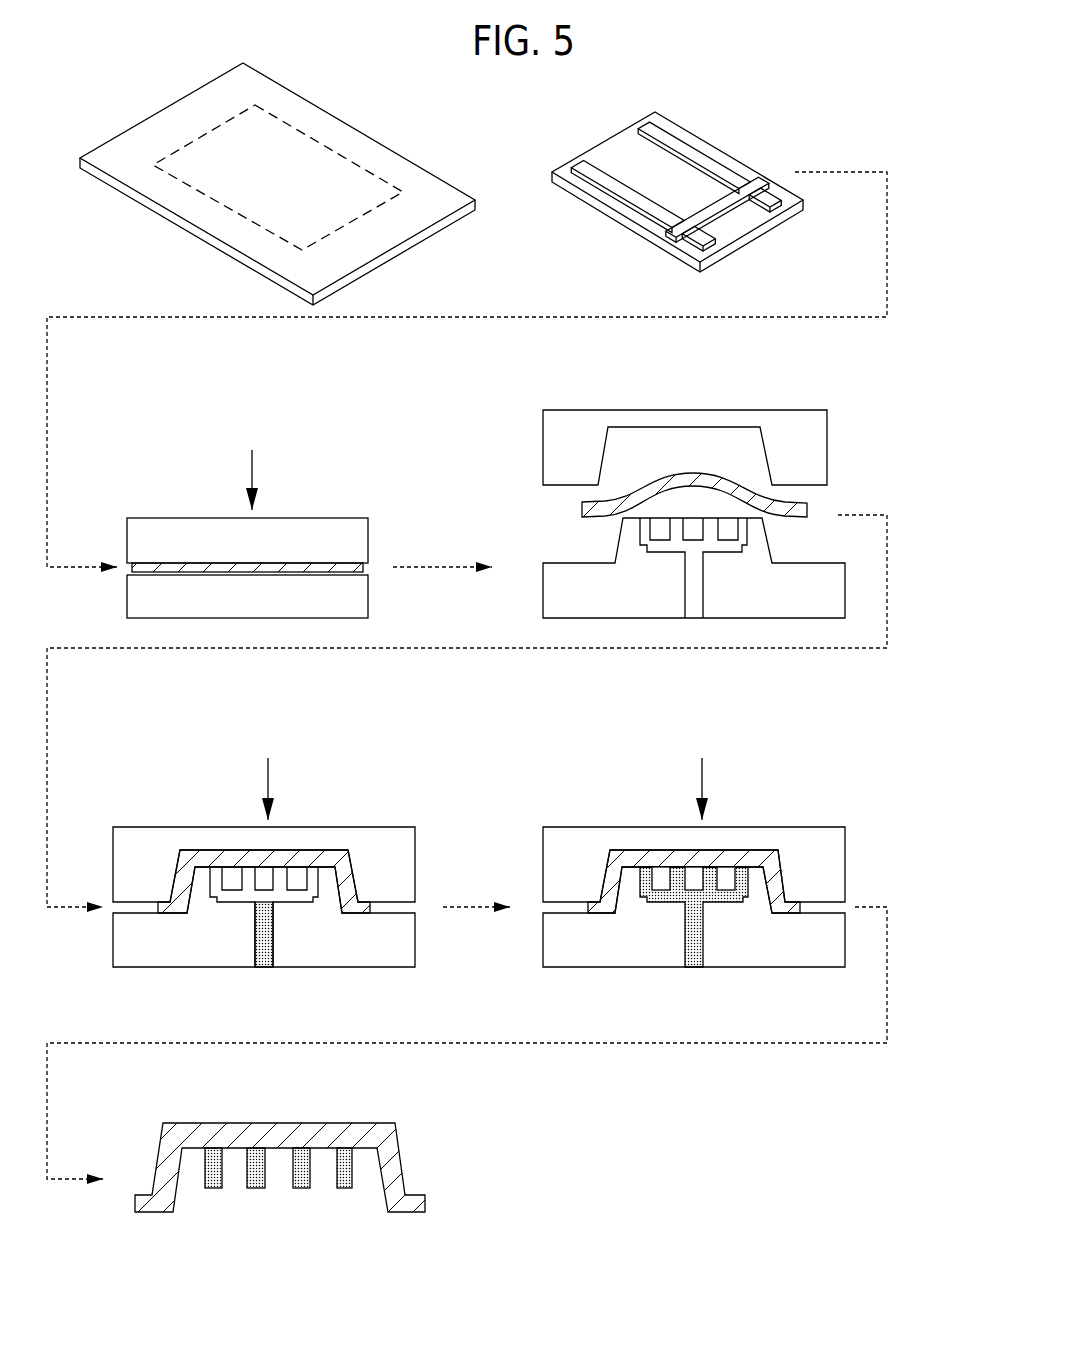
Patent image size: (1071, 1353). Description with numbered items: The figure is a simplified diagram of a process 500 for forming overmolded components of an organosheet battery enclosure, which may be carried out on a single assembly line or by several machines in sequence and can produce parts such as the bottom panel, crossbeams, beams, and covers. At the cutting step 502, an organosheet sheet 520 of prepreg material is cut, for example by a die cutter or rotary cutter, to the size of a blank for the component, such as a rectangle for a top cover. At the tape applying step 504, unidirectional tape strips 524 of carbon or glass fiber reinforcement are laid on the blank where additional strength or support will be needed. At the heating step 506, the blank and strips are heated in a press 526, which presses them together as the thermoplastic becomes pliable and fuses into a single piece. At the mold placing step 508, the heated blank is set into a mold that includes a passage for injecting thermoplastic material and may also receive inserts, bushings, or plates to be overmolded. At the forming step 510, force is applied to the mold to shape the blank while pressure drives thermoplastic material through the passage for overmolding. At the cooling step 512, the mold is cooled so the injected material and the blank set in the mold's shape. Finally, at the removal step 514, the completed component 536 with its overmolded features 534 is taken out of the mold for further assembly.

The process 500 is at (675, 72).
The cutting step 502 is at (277, 164).
The tape applying step 504 is at (673, 174).
The heating step 506 is at (223, 497).
The mold placing step 508 is at (696, 528).
The forming step 510 is at (299, 885).
The cooling step 512 is at (732, 885).
The removal step 514 is at (323, 1171).
The organosheet sheet 520 is at (148, 132).
The unidirectional tape strips 524 is at (630, 197).
The press 526 is at (140, 590).
The overmolded features 534 is at (345, 1187).
The completed component 536 is at (397, 1168).